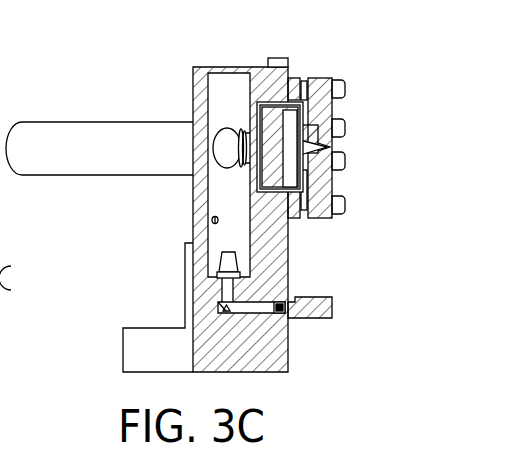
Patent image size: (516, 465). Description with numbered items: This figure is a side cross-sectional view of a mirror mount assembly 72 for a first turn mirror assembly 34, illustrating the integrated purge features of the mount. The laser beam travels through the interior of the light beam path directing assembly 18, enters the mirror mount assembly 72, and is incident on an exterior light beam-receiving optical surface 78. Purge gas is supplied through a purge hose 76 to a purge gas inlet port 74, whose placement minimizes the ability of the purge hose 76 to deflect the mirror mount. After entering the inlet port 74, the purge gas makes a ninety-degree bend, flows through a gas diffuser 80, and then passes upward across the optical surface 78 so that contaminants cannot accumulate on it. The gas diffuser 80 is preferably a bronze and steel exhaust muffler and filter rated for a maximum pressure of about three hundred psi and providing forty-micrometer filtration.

The light beam path directing assembly 18 is at (70, 122).
The first turn mirror assembly 34 is at (304, 78).
The mirror mount assembly 72 is at (140, 351).
The purge gas inlet port 74 is at (286, 316).
The purge hose 76 is at (327, 319).
The optical surface 78 is at (243, 140).
The gas diffuser 80 is at (231, 253).